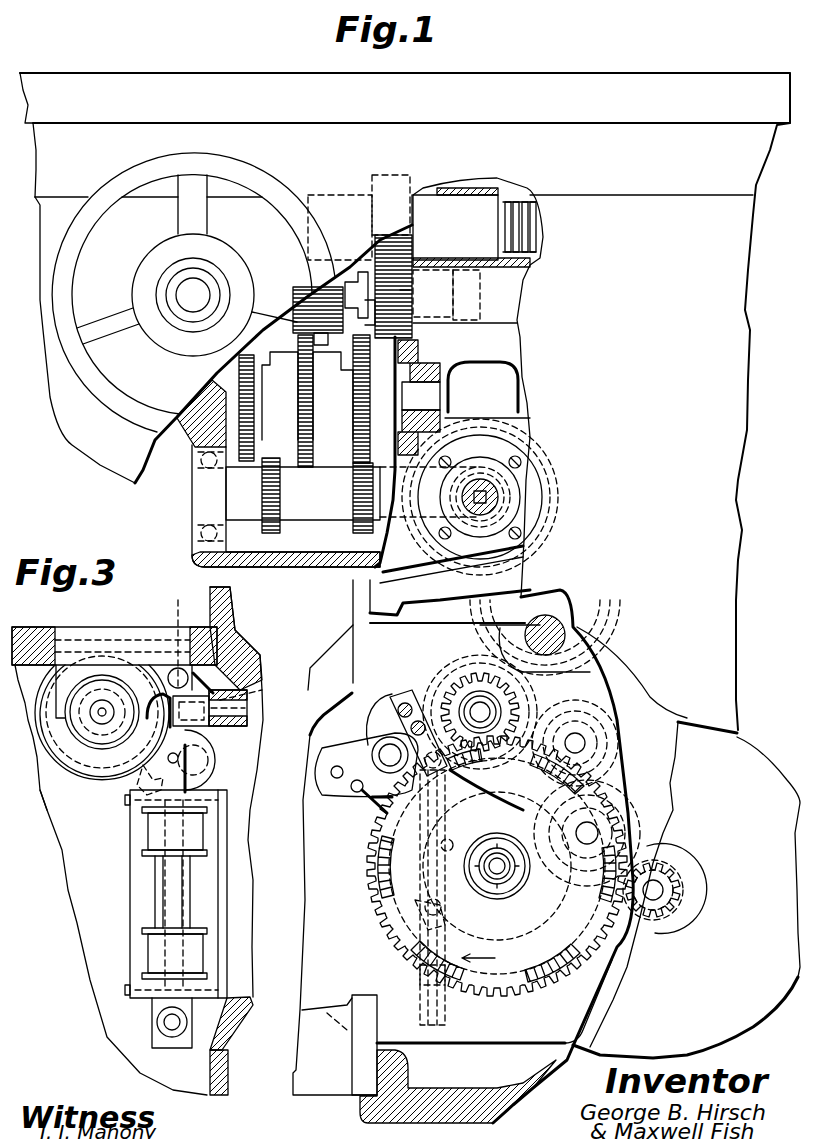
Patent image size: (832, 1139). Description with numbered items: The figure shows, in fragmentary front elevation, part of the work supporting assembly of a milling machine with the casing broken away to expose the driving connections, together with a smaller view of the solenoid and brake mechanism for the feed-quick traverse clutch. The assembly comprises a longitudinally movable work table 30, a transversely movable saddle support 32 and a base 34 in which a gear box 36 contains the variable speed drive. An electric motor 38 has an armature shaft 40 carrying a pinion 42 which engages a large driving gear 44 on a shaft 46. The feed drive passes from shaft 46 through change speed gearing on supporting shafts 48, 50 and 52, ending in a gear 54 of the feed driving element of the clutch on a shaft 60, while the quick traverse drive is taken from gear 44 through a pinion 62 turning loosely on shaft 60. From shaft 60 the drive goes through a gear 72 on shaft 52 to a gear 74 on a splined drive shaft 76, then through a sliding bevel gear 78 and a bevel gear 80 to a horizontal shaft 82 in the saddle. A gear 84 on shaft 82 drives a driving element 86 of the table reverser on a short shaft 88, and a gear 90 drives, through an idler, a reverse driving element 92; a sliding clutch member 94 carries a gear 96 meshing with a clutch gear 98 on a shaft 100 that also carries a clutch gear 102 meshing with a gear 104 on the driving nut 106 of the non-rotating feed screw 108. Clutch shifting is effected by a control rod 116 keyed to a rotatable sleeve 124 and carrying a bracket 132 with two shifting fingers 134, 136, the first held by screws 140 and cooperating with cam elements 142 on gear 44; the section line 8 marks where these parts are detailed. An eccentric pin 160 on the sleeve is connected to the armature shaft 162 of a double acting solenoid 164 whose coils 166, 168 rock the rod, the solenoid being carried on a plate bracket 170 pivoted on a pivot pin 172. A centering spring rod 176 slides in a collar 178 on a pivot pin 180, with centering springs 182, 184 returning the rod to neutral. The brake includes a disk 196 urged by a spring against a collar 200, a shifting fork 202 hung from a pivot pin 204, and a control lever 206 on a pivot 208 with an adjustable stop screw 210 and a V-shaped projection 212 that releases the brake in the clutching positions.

In FIG. 1, the work table 30 is at (520, 78).
In FIG. 1, the saddle support 32 is at (202, 562).
In FIG. 1, the base 34 is at (358, 1110).
In FIG. 1, the gear box 36 is at (350, 598).
In FIG. 1, the electric motor 38 is at (748, 763).
In FIG. 1, the armature shaft 40 is at (662, 883).
In FIG. 1, the pinion 42 is at (670, 920).
In FIG. 1, the driving gear 44 is at (500, 996).
In FIG. 1, the shaft 46 is at (497, 878).
In FIG. 1, the supporting shaft 48 is at (620, 827).
In FIG. 1, the supporting shaft 50 is at (586, 743).
In FIG. 1, the supporting shaft 52 is at (566, 636).
In FIG. 1, the gear 54 is at (427, 675).
In FIG. 1, the supporting shaft 60 is at (479, 708).
In FIG. 3, the supporting shaft 60 is at (105, 718).
In FIG. 1, the pinion 62 is at (447, 700).
In FIG. 1, the gear 72 is at (594, 601).
In FIG. 1, the gear 74 is at (554, 518).
In FIG. 1, the splined drive shaft 76 is at (500, 497).
In FIG. 1, the bevel gear 78 is at (548, 474).
In FIG. 1, the bevel gear 80 is at (520, 460).
In FIG. 1, the horizontal shaft 82 is at (353, 493).
In FIG. 1, the gear 84 is at (362, 533).
In FIG. 1, the driving element 86 is at (415, 358).
In FIG. 1, the supporting shaft 88 is at (440, 396).
In FIG. 1, the gear 90 is at (276, 533).
In FIG. 1, the reverse driving element 92 is at (207, 387).
In FIG. 1, the clutch member 94 is at (297, 366).
In FIG. 1, the gear 96 is at (313, 456).
In FIG. 1, the clutch gear 98 is at (303, 300).
In FIG. 1, the shaft 100 is at (470, 272).
In FIG. 1, the clutch gear 102 is at (408, 285).
In FIG. 1, the gear 104 is at (402, 247).
In FIG. 1, the driving nut 106 is at (490, 200).
In FIG. 1, the feed screw 108 is at (537, 228).
In FIG. 1, the control rod 116 is at (375, 758).
In FIG. 3, the control rod 116 is at (205, 755).
In FIG. 3, the sleeve element 124 is at (216, 760).
In FIG. 1, the bracket 132 is at (378, 718).
In FIG. 1, the shifting finger 134 is at (462, 787).
In FIG. 1, the shifting finger 136 is at (383, 798).
In FIG. 1, the screws 140 is at (407, 706).
In FIG. 1, the cam elements 142 is at (472, 766).
In FIG. 3, the eccentric pin 160 is at (170, 762).
In FIG. 3, the armature shaft 162 is at (156, 882).
In FIG. 3, the double acting solenoid 164 is at (138, 912).
In FIG. 3, the coil 166 is at (148, 836).
In FIG. 3, the coil 168 is at (155, 952).
In FIG. 3, the plate bracket 170 is at (222, 907).
In FIG. 3, the pivot pin 172 is at (158, 1023).
In FIG. 1, the centering spring supporting rod 176 is at (428, 1022).
In FIG. 3, the centering spring supporting rod 176 is at (140, 775).
In FIG. 1, the collar 178 is at (424, 909).
In FIG. 1, the pivot pin 180 is at (420, 922).
In FIG. 1, the centering spring 182 is at (440, 848).
In FIG. 1, the centering spring 184 is at (425, 986).
In FIG. 3, the disk 196 is at (78, 773).
In FIG. 3, the collar 200 is at (93, 733).
In FIG. 3, the shifting fork 202 is at (100, 660).
In FIG. 3, the pivot pin 204 is at (42, 645).
In FIG. 3, the control lever 206 is at (196, 700).
In FIG. 3, the pivot 208 is at (247, 714).
In FIG. 3, the adjustable stop screw 210 is at (178, 641).
In FIG. 3, the V-shaped projection 212 is at (261, 688).
In FIG. 1, the section line 8— 8 is at (277, 802).